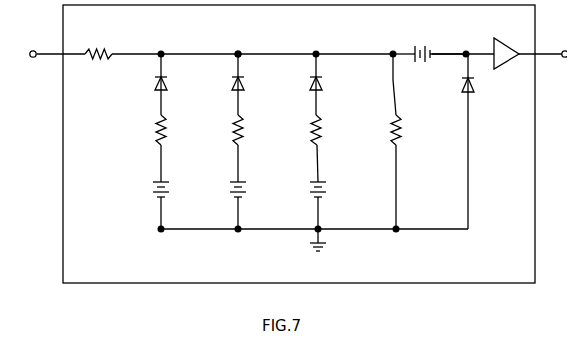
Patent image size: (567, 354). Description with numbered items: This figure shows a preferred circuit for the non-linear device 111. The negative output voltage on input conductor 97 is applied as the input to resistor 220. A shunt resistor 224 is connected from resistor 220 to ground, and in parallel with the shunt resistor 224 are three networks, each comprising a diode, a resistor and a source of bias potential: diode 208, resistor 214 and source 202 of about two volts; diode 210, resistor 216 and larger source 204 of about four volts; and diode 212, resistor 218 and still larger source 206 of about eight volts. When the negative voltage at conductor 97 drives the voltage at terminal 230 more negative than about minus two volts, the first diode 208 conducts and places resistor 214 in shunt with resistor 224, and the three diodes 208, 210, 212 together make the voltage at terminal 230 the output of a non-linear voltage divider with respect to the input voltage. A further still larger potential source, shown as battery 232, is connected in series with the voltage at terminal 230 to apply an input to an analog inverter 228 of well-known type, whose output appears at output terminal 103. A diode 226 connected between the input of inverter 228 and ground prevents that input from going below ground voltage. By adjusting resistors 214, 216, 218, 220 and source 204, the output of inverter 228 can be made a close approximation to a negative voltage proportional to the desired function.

The input conductor 97 is at (43, 52).
The output terminal 103 is at (549, 50).
The non-linear device 111 is at (155, 287).
The resistor 220 is at (97, 50).
The terminal 230 is at (239, 50).
The diode 208 is at (153, 90).
The diode 210 is at (230, 90).
The diode 212 is at (308, 90).
The resistor 214 is at (155, 129).
The resistor 216 is at (233, 129).
The resistor 218 is at (312, 129).
The source of bias potential 202 is at (155, 195).
The source of bias potential 204 is at (231, 195).
The source of bias potential 206 is at (312, 196).
The shunt resistor 224 is at (400, 128).
The battery 232 is at (432, 58).
The diode 226 is at (473, 90).
The analog inverter 228 is at (507, 42).